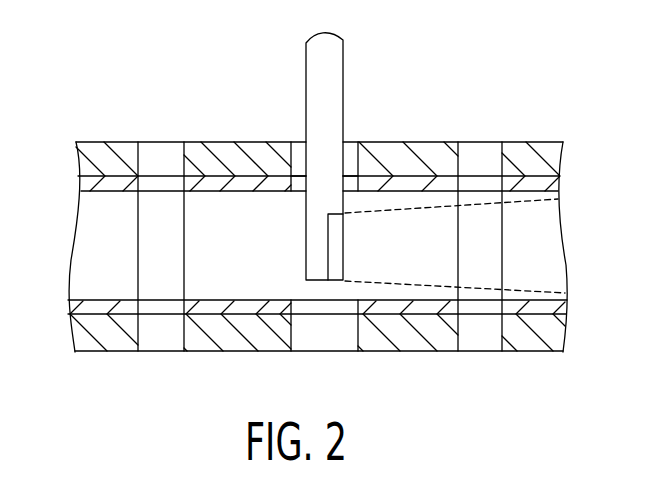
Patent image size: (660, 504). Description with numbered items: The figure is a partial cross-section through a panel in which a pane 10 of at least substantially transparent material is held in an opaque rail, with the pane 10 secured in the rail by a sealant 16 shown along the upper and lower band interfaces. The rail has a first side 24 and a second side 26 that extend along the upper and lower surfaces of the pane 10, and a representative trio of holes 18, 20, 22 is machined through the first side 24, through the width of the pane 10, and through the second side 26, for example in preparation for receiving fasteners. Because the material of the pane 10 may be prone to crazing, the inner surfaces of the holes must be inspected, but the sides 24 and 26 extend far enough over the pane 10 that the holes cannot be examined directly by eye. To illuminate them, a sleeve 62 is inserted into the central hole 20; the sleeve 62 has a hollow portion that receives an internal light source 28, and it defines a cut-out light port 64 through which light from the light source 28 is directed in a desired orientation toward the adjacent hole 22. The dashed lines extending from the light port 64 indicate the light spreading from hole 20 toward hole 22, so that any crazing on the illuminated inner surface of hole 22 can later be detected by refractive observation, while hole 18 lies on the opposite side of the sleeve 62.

The pane 10 is at (208, 156).
The sealant 16 is at (266, 156).
The hole 18 is at (176, 158).
The hole 20 is at (352, 152).
The hole 22 is at (500, 160).
The first side 24 is at (544, 142).
The second side 26 is at (535, 353).
The light source 28 is at (345, 252).
The sleeve 62 is at (345, 97).
The cut-out light port 64 is at (328, 240).